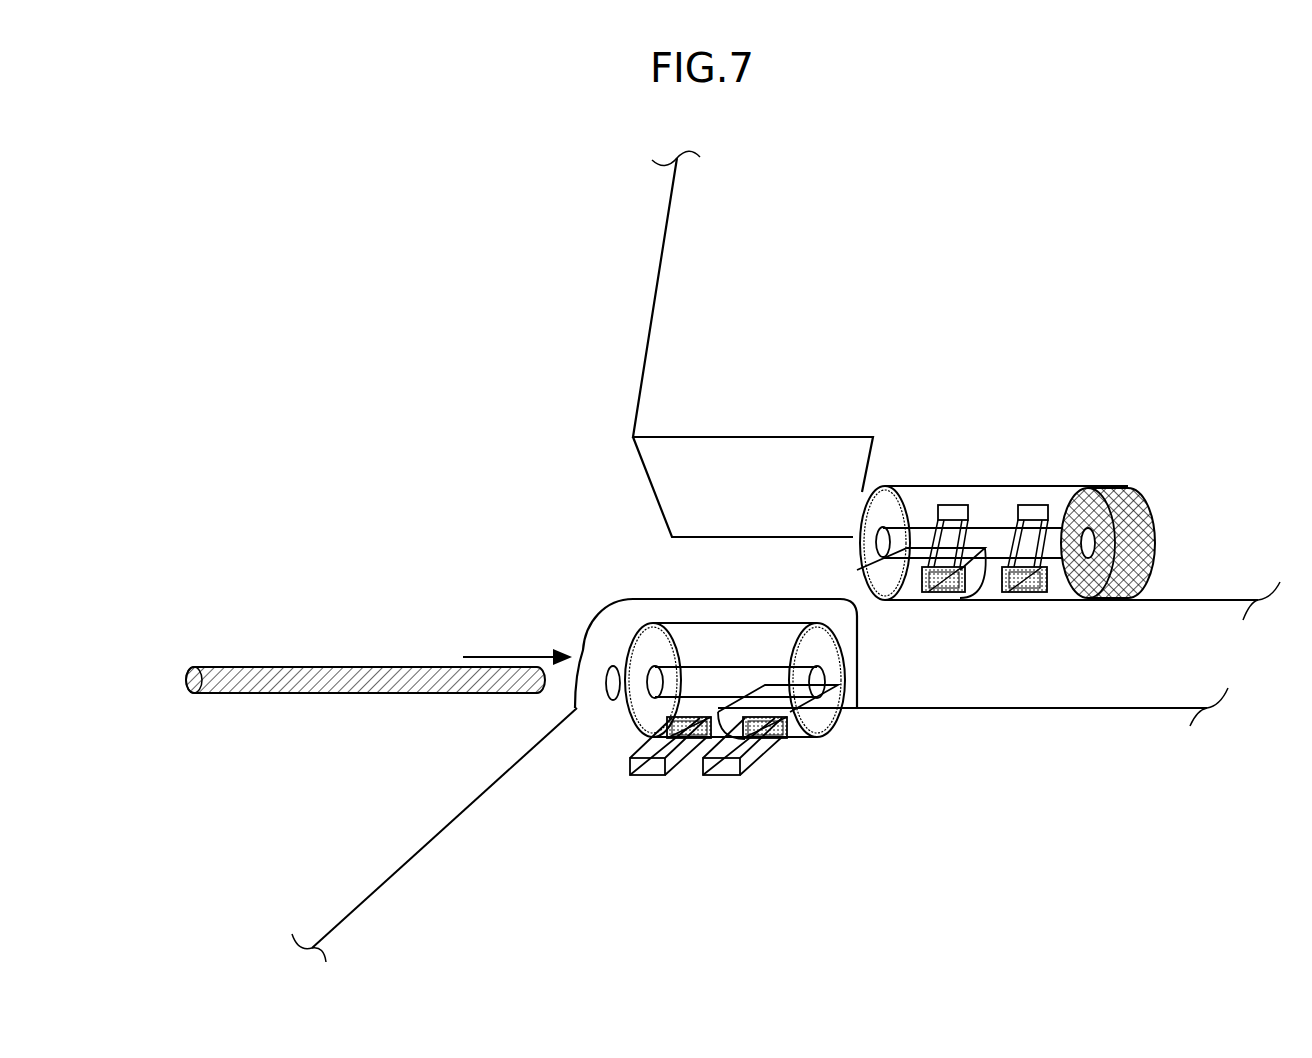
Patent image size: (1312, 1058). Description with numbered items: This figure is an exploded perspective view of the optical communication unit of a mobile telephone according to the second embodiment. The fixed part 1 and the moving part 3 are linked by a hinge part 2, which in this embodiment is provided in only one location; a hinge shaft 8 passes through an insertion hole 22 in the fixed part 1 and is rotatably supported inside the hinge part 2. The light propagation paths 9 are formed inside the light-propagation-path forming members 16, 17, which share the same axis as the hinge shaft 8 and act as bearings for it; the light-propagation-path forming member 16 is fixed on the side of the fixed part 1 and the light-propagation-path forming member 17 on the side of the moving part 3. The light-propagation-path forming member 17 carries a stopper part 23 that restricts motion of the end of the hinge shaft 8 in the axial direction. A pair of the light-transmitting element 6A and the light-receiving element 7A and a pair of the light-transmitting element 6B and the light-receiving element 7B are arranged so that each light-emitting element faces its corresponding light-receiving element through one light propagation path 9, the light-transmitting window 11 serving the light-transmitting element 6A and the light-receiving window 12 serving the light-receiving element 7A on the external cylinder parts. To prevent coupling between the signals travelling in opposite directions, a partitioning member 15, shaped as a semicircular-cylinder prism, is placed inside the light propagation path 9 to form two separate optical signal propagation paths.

The fixed part 1 is at (445, 862).
The hinge part 2 is at (586, 497).
The moving part 3 is at (690, 276).
The light-transmitting element 6A is at (718, 778).
The light-transmitting element 6B is at (1033, 505).
The light-receiving element 7A is at (953, 505).
The light-receiving element 7B is at (645, 778).
The hinge shaft 8 is at (325, 666).
The light propagation path 9 is at (818, 640).
The light-transmitting window 11 is at (775, 742).
The light-receiving window 12 is at (667, 732).
The partitioning member 15 is at (795, 745).
The light-propagation-path forming member 16 is at (705, 638).
The light-propagation-path forming member 17 is at (917, 503).
The insertion hole 22 is at (608, 666).
The stopper part 23 is at (1145, 498).